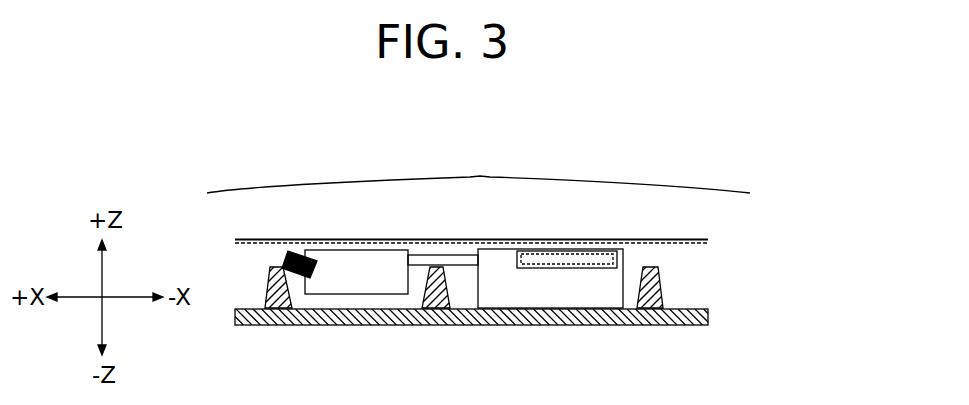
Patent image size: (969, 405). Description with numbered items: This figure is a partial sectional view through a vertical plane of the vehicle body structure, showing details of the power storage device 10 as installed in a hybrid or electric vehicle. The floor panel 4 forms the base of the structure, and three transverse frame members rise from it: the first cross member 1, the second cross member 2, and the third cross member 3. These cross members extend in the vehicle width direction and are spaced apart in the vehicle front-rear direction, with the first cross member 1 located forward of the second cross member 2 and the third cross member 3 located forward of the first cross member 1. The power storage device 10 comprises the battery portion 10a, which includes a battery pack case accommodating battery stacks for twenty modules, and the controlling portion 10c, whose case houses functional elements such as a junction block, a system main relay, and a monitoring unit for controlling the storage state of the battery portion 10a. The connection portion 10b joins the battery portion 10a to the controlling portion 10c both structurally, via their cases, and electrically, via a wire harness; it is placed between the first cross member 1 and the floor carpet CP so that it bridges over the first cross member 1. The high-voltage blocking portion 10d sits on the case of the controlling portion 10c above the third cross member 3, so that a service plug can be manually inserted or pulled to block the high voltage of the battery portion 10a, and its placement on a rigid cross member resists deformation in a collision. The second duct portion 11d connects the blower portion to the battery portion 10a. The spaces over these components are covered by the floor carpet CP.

The first cross member 1 is at (423, 293).
The second cross member 2 is at (663, 288).
The third cross member 3 is at (268, 285).
The floor panel 4 is at (703, 320).
The power storage device 10 is at (478, 170).
The battery portion 10a is at (624, 262).
The connection portion 10b is at (452, 264).
The controlling portion 10c is at (371, 250).
The high-voltage blocking portion 10d is at (291, 255).
The second duct portion 11d is at (563, 268).
The floor carpet CP is at (708, 242).